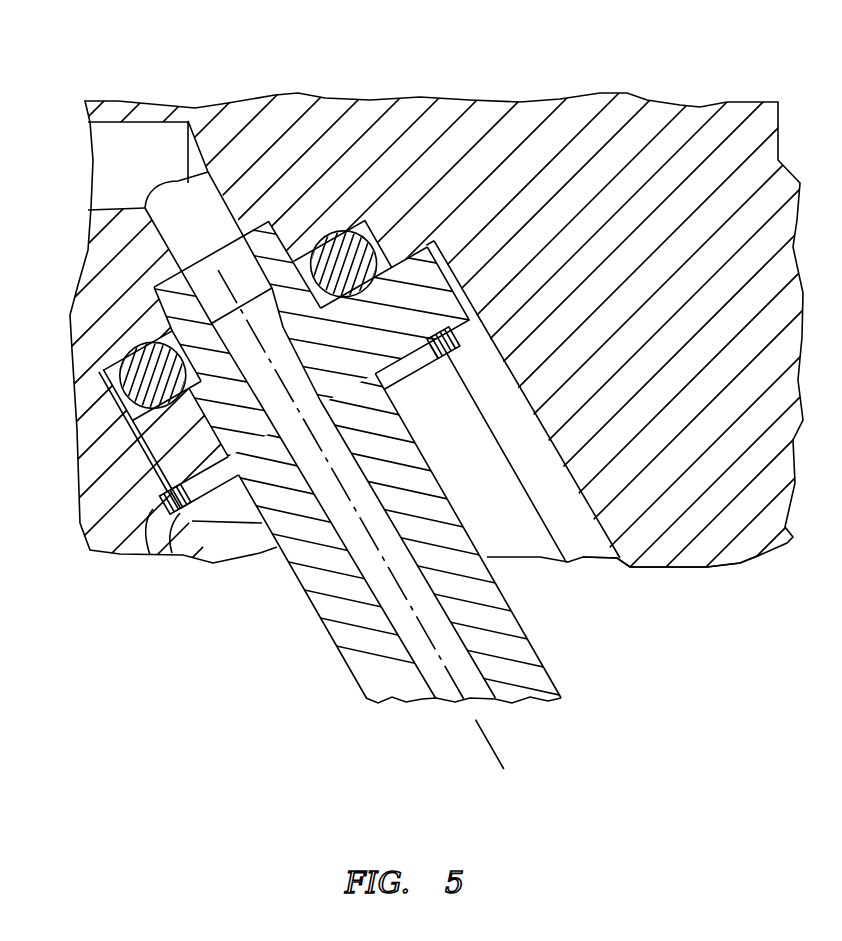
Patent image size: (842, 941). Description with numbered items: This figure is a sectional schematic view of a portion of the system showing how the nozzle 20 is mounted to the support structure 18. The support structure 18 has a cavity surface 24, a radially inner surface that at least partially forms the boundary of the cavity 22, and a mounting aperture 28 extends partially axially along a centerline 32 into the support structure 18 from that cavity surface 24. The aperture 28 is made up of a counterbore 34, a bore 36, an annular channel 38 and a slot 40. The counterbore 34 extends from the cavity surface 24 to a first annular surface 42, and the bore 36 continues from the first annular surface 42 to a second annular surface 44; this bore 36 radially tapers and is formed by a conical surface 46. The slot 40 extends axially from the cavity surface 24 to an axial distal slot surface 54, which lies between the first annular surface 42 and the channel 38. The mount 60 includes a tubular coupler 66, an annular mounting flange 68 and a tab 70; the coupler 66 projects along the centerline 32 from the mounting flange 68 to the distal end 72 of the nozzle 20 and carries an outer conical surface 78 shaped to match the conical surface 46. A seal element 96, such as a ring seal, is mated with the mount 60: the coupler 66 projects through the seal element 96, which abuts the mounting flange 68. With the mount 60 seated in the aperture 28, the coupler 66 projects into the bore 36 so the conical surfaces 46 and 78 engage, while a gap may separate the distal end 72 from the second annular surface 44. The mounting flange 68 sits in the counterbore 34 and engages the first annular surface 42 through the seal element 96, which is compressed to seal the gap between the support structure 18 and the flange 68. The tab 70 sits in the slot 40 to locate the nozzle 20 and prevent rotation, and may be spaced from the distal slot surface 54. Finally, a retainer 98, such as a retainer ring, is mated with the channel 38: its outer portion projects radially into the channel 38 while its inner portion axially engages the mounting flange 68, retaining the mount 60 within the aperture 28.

The support structure 18 is at (665, 85).
The nozzle 20 is at (334, 656).
The cavity 22 is at (711, 690).
The cavity surface 24 is at (737, 562).
The mounting aperture 28 is at (217, 519).
The centerline 32 is at (487, 736).
The counterbore 34 is at (193, 513).
The bore 36 is at (282, 224).
The annular channel 38 is at (174, 513).
The slot 40 is at (577, 552).
The first annular surface 42 is at (105, 380).
The second annular surface 44 is at (217, 265).
The conical surface 46 is at (152, 287).
The axial distal slot surface 54 is at (455, 250).
The mount 60 is at (409, 245).
The tubular coupler 66 is at (312, 236).
The annular mounting flange 68 is at (149, 466).
The tab 70 is at (461, 284).
The distal end 72 is at (243, 240).
The outer conical surface 78 is at (165, 322).
The seal element 96 is at (105, 387).
The retainer 98 is at (154, 515).